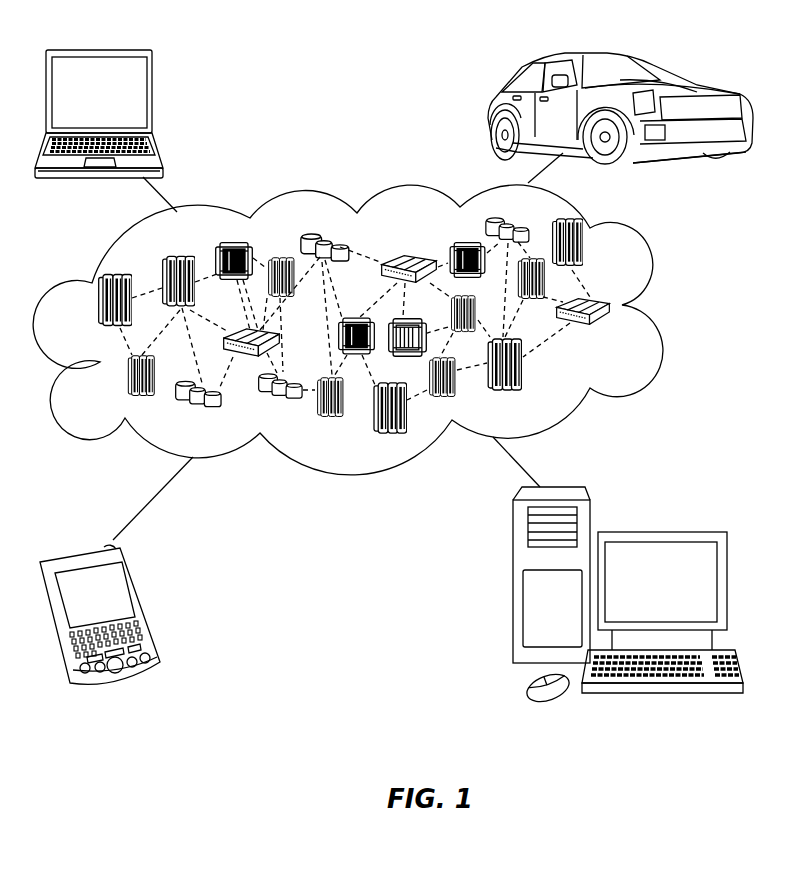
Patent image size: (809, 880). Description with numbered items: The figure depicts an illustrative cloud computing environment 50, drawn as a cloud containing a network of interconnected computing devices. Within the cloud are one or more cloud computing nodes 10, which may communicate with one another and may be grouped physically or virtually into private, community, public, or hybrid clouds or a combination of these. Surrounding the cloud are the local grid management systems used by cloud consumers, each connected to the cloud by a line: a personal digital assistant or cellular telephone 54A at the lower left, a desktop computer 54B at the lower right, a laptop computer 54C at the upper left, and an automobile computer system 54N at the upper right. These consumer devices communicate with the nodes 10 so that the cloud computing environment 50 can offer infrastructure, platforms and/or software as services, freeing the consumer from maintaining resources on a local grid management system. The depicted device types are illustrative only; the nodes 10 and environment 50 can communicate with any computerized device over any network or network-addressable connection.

The cloud computing nodes 10 is at (621, 337).
The cloud computing environment 50 is at (662, 308).
The personal digital assistant (PDA) or cellular telephone 54A is at (145, 605).
The desktop computer 54B is at (660, 532).
The laptop computer 54C is at (152, 97).
The automobile computer system 54N is at (490, 110).